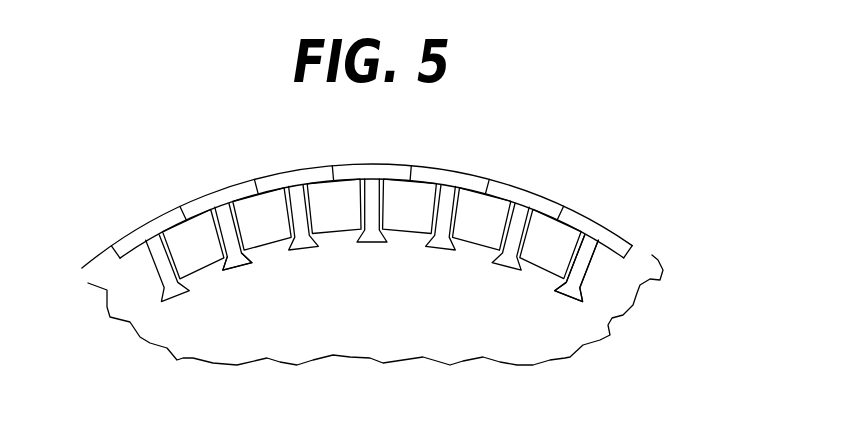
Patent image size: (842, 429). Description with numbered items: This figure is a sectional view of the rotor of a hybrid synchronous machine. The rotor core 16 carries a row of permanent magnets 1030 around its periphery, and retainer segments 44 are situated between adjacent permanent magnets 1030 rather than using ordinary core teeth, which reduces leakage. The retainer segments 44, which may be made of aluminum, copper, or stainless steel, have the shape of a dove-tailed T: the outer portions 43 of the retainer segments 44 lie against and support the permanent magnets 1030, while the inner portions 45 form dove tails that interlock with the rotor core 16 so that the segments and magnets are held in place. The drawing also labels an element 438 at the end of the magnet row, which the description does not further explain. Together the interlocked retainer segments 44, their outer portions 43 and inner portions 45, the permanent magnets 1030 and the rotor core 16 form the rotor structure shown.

The rotor core 16 is at (390, 315).
The outer portions of the retainer segments 43 is at (245, 190).
The retainer segments 44 is at (227, 218).
The inner portions of the retainer segments 45 is at (243, 256).
The end pole piece 438 is at (583, 272).
The permanent magnets 1030 is at (217, 253).